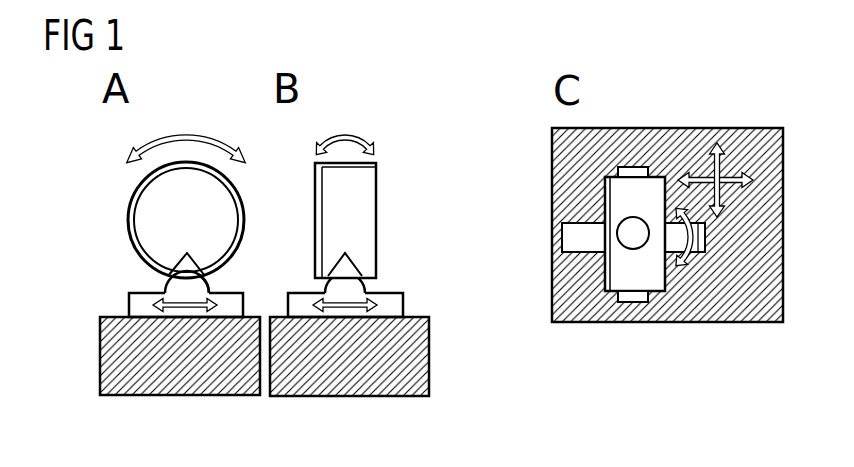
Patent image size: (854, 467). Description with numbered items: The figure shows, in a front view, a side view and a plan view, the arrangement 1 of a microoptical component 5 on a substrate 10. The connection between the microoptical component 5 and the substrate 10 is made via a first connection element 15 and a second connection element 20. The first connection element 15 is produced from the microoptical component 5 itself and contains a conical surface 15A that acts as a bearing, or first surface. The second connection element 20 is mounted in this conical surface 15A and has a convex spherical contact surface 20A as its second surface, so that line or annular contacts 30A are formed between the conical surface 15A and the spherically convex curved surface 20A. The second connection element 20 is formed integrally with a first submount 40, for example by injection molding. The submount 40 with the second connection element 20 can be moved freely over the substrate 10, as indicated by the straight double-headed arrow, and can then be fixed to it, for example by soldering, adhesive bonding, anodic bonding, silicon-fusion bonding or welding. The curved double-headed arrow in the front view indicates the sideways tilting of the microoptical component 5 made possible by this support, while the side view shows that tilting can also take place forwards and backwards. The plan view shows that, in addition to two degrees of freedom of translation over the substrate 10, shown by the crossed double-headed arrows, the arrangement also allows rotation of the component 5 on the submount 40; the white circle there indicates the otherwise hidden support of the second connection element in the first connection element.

The arrangement 1 is at (108, 190).
The microoptical component 5 is at (327, 234).
The substrate 10 is at (112, 362).
The first connection element 15 is at (201, 252).
The conical surface 15A is at (360, 265).
The second connection element 20 is at (165, 283).
The convex spherical contact surface 20A is at (368, 283).
The line or annular contacts 30A is at (205, 282).
The first submount 40 is at (137, 308).